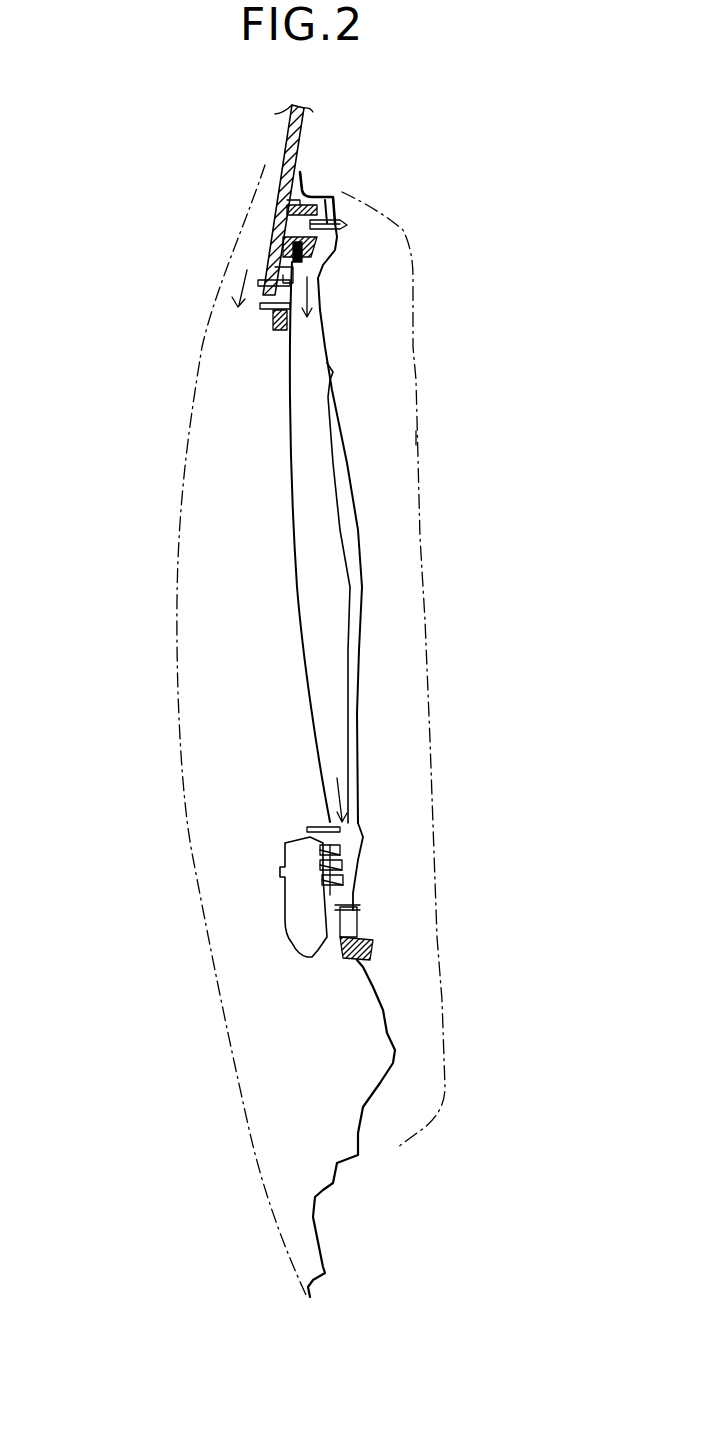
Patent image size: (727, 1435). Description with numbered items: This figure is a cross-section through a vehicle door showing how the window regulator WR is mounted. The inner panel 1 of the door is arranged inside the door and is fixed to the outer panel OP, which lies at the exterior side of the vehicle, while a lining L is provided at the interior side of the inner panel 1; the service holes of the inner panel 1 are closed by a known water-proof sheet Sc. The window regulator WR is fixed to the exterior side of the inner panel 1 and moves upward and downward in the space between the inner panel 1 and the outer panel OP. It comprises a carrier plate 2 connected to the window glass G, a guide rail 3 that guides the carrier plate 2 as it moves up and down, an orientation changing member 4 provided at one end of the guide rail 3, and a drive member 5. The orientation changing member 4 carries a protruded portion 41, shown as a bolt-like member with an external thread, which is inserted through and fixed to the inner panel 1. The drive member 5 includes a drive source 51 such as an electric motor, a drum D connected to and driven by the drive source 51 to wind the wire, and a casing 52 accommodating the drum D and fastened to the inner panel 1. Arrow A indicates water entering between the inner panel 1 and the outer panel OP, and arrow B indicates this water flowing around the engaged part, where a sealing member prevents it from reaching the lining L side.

The inner panel 1 is at (327, 333).
The carrier plate 2 is at (273, 307).
The guide rail 3 is at (303, 668).
The orientation changing member 4 is at (307, 212).
The protruded portion 41 is at (347, 223).
The drive member 5 is at (270, 968).
The drive source 51 is at (293, 923).
The casing 52 is at (287, 843).
The window glass G is at (282, 153).
The arrow A is at (237, 292).
The arrow B is at (350, 797).
The drum D is at (353, 890).
The lining L is at (420, 438).
The outer panel OP is at (193, 390).
The window regulator WR is at (263, 562).
The water-proof sheet Sc is at (362, 583).